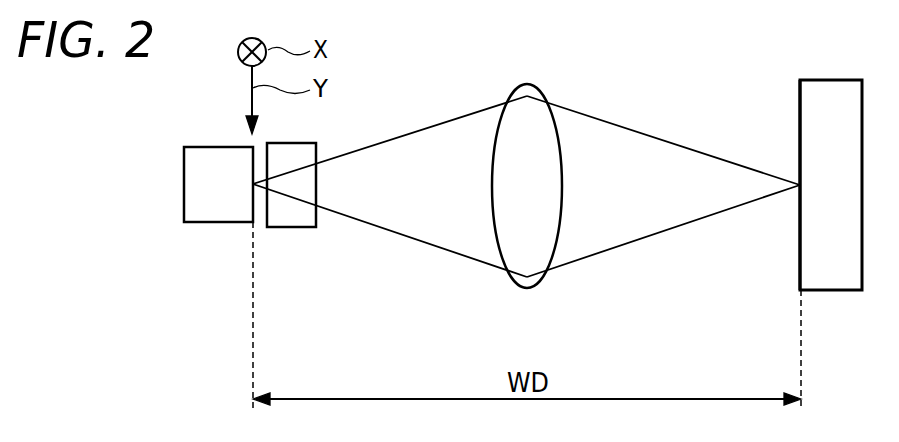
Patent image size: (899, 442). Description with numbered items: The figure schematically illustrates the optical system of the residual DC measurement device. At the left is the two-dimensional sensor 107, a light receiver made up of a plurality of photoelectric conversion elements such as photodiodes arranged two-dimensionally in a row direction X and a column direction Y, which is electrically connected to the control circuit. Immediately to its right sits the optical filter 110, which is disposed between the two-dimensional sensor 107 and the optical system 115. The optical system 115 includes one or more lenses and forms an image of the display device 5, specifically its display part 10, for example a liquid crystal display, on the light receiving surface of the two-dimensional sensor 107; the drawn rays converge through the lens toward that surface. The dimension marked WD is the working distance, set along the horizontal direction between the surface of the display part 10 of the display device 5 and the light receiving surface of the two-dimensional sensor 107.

The two-dimensional sensor 107 is at (200, 147).
The optical filter 110 is at (293, 228).
The optical system 115 is at (523, 84).
The display device 5 is at (830, 80).
The display part 10 is at (800, 91).